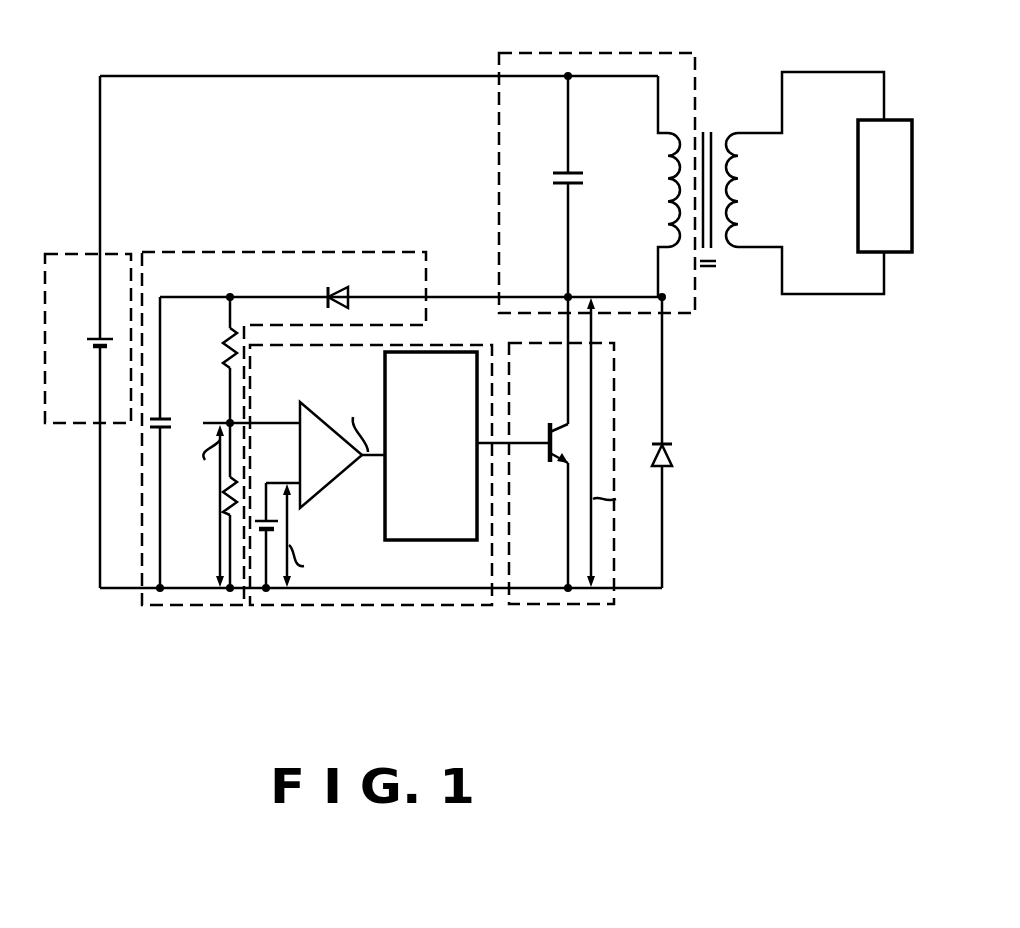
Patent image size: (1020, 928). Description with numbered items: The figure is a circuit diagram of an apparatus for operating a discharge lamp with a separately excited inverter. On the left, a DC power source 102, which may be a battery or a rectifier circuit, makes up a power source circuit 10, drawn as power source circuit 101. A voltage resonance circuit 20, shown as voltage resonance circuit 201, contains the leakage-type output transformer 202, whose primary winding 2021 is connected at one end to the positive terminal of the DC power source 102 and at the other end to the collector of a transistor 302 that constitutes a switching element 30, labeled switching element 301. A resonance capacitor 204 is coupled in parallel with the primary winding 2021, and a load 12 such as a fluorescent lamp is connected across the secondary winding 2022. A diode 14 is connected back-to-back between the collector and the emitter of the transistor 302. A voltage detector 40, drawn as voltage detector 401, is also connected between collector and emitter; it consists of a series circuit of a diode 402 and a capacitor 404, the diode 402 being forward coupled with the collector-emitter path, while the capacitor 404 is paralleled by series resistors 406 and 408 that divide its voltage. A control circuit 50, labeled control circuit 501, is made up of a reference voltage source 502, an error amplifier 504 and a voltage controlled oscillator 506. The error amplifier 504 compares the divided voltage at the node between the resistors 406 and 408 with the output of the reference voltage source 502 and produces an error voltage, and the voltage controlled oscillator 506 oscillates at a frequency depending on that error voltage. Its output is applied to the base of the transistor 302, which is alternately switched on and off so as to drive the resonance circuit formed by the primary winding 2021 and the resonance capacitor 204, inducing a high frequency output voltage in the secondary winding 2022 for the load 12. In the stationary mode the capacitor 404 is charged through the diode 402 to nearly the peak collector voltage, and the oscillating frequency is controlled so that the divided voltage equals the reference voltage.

The power source circuit 10 is at (90, 425).
The power source circuit 101 is at (88, 366).
The DC power source 102 is at (95, 335).
The load 12 is at (858, 215).
The diode 14 is at (673, 455).
The voltage resonance circuit 20 is at (614, 52).
The voltage resonance circuit 201 is at (662, 157).
The output transformer 202 is at (713, 183).
The primary winding 2021 is at (667, 192).
The secondary winding 2022 is at (760, 170).
The resonance capacitor 204 is at (553, 178).
The switching element 30 is at (568, 605).
The switching element 301 is at (577, 486).
The transistor 302 is at (550, 452).
The voltage detector 40 is at (200, 606).
The voltage detector 401 is at (284, 463).
The diode 402 is at (357, 278).
The capacitor 404 is at (180, 423).
The resistor 406 is at (226, 328).
The resistor 408 is at (222, 493).
The control circuit 50 is at (376, 606).
The control circuit 501 is at (371, 510).
The reference voltage source 502 is at (267, 481).
The error amplifier 504 is at (331, 488).
The voltage controlled oscillator 506 is at (413, 541).